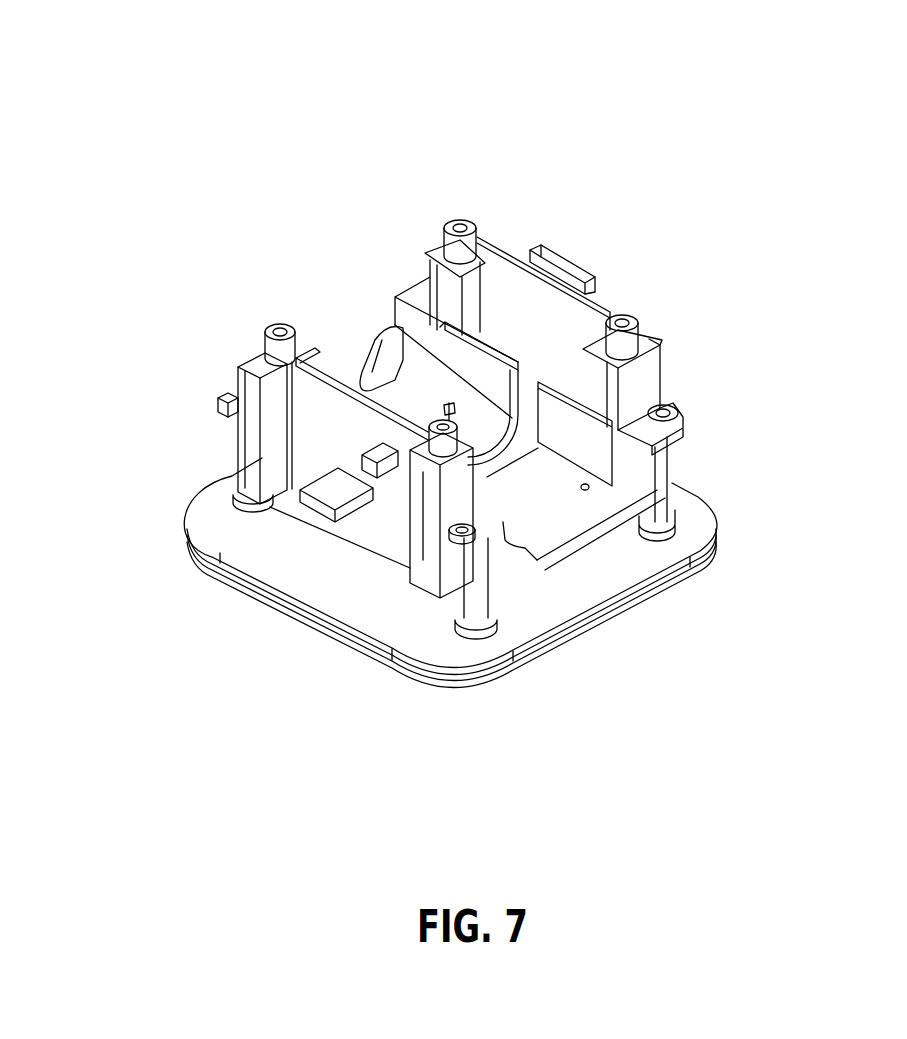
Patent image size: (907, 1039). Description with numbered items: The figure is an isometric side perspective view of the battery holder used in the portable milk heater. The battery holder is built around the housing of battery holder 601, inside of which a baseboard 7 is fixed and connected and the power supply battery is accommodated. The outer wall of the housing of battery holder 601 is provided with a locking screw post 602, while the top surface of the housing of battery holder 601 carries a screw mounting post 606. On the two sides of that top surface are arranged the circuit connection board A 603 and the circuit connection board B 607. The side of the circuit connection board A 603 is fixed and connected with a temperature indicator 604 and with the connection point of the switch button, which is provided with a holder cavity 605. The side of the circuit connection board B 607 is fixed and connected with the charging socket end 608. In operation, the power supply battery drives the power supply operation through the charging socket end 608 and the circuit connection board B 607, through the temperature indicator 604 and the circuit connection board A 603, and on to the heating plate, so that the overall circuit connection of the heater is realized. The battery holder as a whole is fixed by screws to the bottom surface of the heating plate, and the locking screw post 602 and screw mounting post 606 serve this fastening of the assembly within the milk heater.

The baseboard 7 is at (432, 620).
The housing of battery holder 601 is at (542, 568).
The locking screw post 602 is at (665, 480).
The circuit connection board A 603 is at (573, 383).
The temperature indicator 604 is at (552, 260).
The holder cavity 605 is at (442, 343).
The screw mounting post 606 is at (268, 340).
The circuit connection board B 607 is at (305, 437).
The charging socket end 608 is at (333, 488).